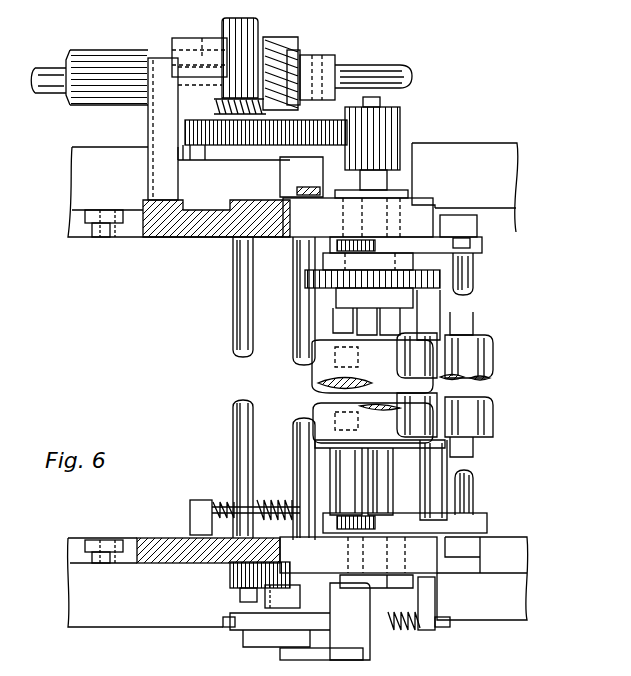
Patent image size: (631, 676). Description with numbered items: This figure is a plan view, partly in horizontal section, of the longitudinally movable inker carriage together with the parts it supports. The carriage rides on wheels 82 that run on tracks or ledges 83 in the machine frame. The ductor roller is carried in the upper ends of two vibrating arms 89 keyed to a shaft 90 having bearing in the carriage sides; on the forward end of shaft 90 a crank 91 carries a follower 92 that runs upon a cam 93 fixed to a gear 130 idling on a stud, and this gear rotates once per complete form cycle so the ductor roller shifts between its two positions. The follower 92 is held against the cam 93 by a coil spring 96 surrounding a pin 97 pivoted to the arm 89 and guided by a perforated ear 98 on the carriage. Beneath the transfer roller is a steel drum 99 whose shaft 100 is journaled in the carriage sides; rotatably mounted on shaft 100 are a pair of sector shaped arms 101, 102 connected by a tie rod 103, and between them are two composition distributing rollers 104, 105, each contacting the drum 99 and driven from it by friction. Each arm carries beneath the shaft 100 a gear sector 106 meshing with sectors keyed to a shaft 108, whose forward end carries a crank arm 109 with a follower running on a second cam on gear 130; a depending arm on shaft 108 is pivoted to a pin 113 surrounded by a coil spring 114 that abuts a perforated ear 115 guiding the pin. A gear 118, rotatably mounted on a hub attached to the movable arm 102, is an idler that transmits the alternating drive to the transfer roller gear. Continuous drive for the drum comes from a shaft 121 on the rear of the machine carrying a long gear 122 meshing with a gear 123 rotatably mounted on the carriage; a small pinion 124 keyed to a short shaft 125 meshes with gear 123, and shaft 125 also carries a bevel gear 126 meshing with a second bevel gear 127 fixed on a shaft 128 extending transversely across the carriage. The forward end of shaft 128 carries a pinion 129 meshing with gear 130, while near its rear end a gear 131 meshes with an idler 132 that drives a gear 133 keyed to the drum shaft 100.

The wheels 82 is at (86, 200).
The tracks or ledges 83 is at (511, 222).
The vibrating arms 89 is at (290, 200).
The shaft 90 is at (297, 304).
The crank 91 is at (272, 597).
The follower 92 is at (233, 625).
The cam 93 is at (325, 620).
The coil spring 96 is at (392, 627).
The pin 97 is at (448, 622).
The perforated ear 98 is at (428, 630).
The steel drum 99 is at (330, 412).
The shaft 100 is at (380, 475).
The sector shaped arm 101 is at (481, 516).
The sector shaped arm 102 is at (482, 246).
The tie rod 103 is at (475, 270).
The composition distributing roller 104 is at (455, 350).
The composition distributing roller 105 is at (491, 351).
The gear sector 106 is at (332, 247).
The shaft 108 is at (346, 452).
The crank arm 109 is at (324, 648).
The pin 113 is at (292, 508).
The coil spring 114 is at (258, 500).
The perforated ear 115 is at (202, 505).
The gear 118 is at (305, 276).
The shaft 121 is at (385, 67).
The long gear 122 is at (106, 107).
The gear 123 is at (256, 26).
The small pinion 124 is at (227, 92).
The short shaft 125 is at (193, 78).
The bevel gear 126 is at (293, 38).
The bevel gear 127 is at (200, 110).
The shaft 128 is at (252, 312).
The pinion 129 is at (232, 566).
The gear 130 is at (248, 598).
The gear 131 is at (188, 130).
The idler 132 is at (338, 102).
The gear 133 is at (397, 116).